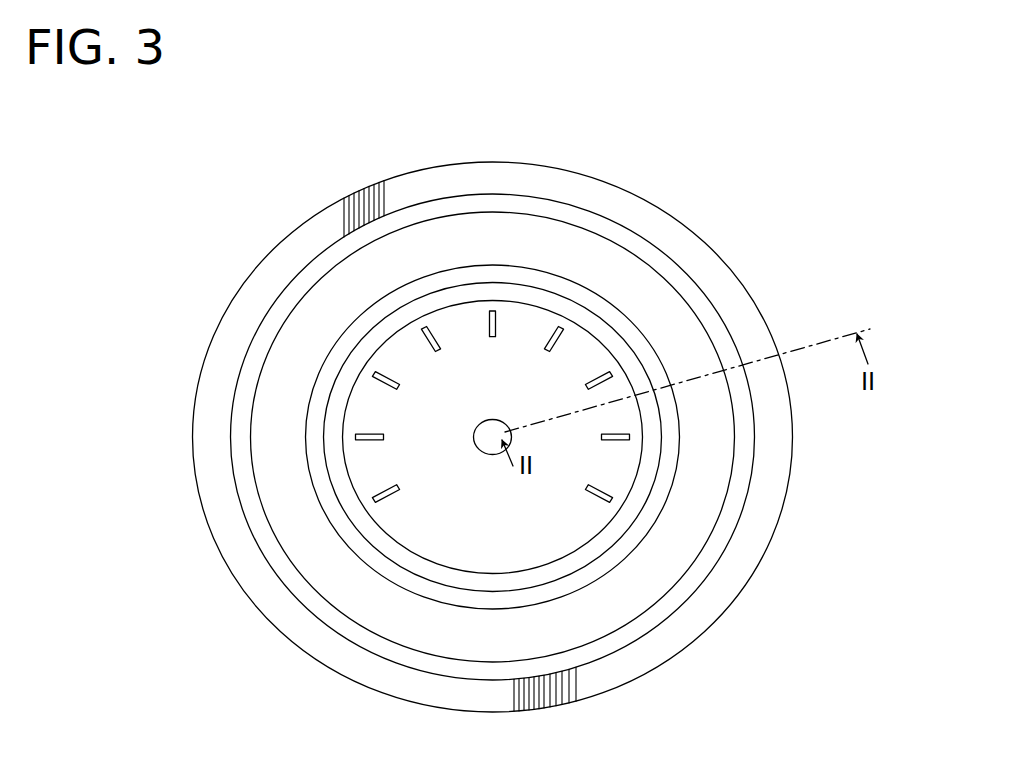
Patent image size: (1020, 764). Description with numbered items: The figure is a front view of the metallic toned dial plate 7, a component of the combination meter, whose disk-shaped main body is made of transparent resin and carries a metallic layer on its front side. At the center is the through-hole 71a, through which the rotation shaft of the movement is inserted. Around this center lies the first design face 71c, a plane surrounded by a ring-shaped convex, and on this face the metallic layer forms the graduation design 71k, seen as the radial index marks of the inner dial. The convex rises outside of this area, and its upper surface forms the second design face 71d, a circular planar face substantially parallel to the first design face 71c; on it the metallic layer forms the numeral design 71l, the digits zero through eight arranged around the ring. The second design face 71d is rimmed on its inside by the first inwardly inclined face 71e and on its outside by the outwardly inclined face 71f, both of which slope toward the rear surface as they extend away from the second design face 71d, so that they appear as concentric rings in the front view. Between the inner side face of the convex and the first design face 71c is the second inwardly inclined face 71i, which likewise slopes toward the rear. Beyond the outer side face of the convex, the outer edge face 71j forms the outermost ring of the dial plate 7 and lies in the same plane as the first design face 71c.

The metallic toned dial plate 7 is at (686, 188).
The through-hole 71a is at (490, 447).
The first design face 71c is at (472, 343).
The second design face 71d is at (662, 302).
The first inwardly inclined face 71e is at (538, 277).
The outwardly inclined face 71f is at (717, 325).
The second inwardly inclined face 71i is at (587, 551).
The outer edge face 71j is at (747, 558).
The graduation design 71k is at (363, 440).
The numeral design 71l is at (277, 447).